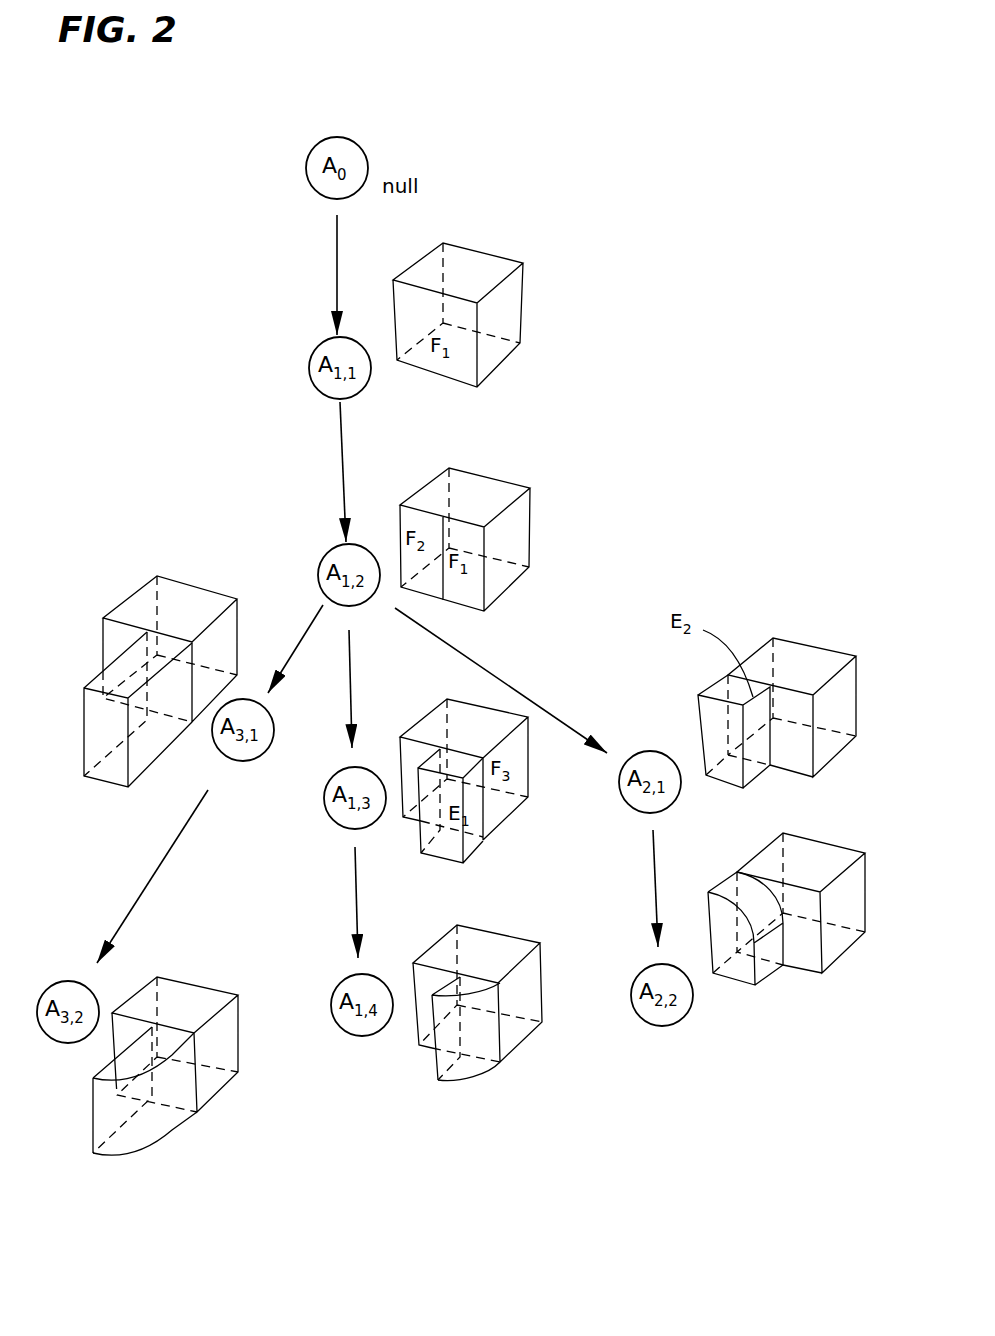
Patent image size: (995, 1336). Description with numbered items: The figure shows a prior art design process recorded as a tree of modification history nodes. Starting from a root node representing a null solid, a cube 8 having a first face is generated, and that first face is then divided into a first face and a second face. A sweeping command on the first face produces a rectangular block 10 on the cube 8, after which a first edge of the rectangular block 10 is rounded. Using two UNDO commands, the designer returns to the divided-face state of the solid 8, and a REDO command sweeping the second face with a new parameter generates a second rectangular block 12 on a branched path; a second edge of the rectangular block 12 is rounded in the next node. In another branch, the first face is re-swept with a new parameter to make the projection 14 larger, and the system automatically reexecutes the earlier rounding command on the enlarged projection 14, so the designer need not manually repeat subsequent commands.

The cube 8 is at (497, 253).
The rectangular block 10 is at (475, 847).
The second rectangular block 12 is at (707, 690).
The projection 14 is at (90, 682).